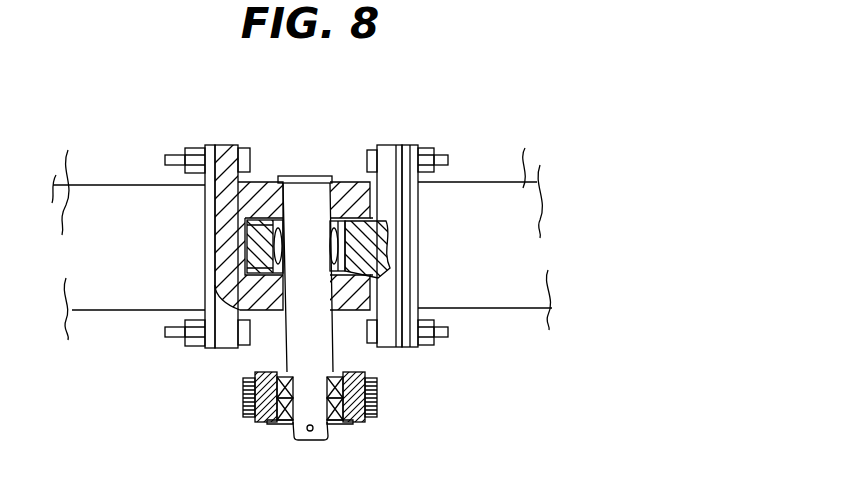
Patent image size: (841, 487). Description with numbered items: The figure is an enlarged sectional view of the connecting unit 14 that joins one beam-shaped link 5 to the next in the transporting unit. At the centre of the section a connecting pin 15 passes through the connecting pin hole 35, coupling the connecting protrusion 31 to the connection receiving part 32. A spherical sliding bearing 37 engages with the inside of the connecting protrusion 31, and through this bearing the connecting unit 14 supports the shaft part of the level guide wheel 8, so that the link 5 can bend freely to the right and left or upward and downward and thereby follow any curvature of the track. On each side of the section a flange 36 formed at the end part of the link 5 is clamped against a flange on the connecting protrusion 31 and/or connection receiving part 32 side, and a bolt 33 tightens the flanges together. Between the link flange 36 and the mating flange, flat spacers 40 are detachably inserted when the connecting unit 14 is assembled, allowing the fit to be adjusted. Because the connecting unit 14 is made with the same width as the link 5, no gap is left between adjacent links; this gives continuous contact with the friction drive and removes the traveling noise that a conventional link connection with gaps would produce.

The link 5 is at (302, 227).
The level guide wheel 8 is at (243, 417).
The connecting unit 14 is at (313, 112).
The connecting pin 15 is at (297, 355).
The connecting protrusion 31 is at (255, 248).
The connection receiving part 32 is at (262, 192).
The bolt 33 is at (243, 140).
The connecting pin hole 35 is at (332, 177).
The flange 36 is at (205, 212).
The spherical sliding bearing 37 is at (332, 242).
The flat spacer 40 is at (400, 143).